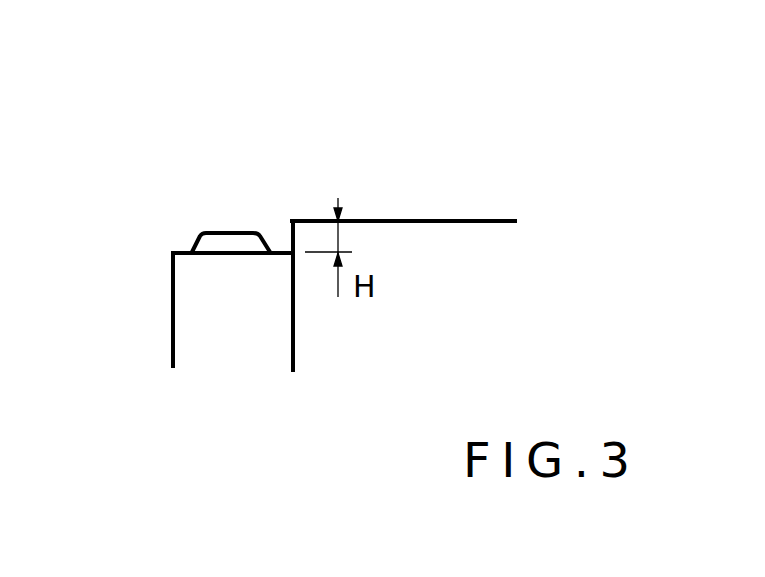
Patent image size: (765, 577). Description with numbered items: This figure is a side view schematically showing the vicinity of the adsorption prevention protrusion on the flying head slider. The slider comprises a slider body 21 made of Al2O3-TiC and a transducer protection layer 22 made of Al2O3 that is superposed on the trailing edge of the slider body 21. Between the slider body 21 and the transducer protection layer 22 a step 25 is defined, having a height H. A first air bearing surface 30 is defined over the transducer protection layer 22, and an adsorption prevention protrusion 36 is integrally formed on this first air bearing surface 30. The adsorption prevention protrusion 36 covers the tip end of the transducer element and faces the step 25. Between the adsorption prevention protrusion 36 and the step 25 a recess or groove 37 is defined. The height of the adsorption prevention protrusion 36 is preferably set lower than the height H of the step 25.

The slider body 21 is at (292, 347).
The transducer protection layer 22 is at (172, 347).
The step 25 is at (288, 230).
The first air bearing surface 30 is at (453, 221).
The adsorption prevention protrusion 36 is at (199, 233).
The recess or groove 37 is at (262, 221).